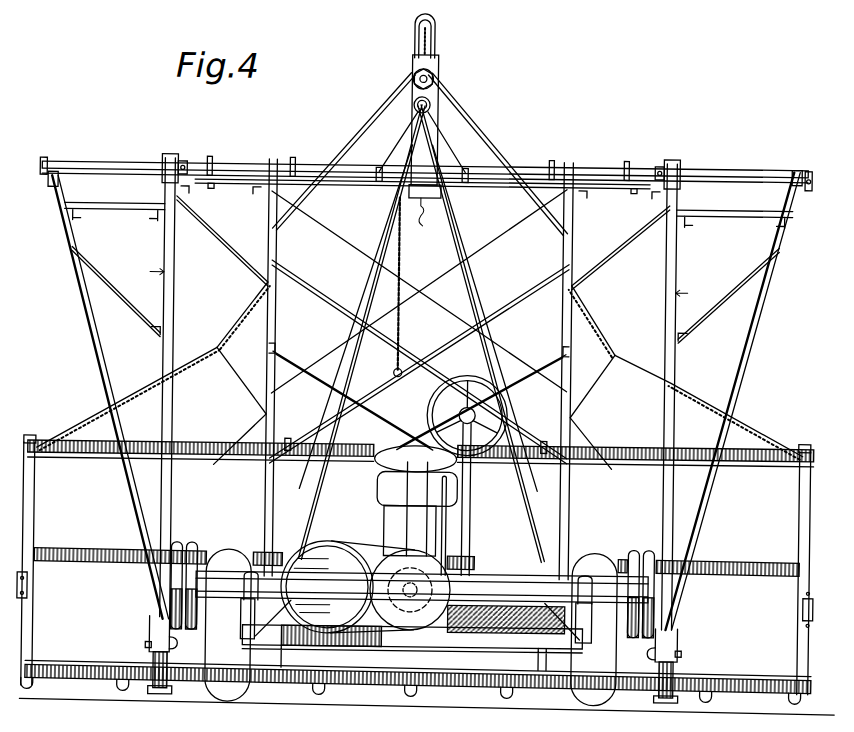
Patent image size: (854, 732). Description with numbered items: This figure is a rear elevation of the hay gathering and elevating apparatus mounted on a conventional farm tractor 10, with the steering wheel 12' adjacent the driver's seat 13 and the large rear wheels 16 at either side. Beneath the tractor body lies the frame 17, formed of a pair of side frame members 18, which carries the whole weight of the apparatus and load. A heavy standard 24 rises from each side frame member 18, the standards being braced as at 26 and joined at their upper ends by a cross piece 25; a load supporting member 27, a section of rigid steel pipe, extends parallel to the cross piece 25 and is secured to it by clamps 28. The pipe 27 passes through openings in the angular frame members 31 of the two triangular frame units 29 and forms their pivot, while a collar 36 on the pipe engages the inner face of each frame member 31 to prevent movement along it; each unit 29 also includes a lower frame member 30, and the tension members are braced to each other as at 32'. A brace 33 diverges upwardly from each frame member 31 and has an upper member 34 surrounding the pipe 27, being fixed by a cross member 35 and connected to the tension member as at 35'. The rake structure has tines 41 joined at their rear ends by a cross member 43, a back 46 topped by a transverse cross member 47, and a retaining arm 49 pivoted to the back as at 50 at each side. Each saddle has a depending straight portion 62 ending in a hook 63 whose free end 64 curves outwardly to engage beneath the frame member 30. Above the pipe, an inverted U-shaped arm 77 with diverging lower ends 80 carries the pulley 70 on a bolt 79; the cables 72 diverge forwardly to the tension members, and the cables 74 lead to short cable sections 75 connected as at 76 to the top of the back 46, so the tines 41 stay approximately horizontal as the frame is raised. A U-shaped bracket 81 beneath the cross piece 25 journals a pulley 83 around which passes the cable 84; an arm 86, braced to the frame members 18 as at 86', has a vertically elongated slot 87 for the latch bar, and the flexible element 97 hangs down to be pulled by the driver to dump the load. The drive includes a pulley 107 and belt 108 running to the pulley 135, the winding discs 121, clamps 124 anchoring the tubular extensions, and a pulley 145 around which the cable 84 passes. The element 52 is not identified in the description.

The farm tractor 10 is at (370, 494).
The steering wheel 12' is at (466, 458).
The driver's seat 13 is at (415, 458).
The rear wheels 16 is at (240, 696).
The frame 17 is at (480, 648).
The side frame members 18 is at (243, 628).
The standard 24 is at (252, 318).
The cross piece 25 is at (226, 188).
The brace 26 is at (487, 242).
The load supporting member 27 is at (518, 171).
The clamps 28 is at (210, 161).
The triangular frame unit 29 is at (417, 279).
The lower frame member 30 is at (152, 636).
The angular frame member 31 is at (175, 355).
The brace 32' is at (423, 238).
The brace 33 is at (84, 322).
The upper member 34 is at (803, 169).
The cross member 35 is at (428, 227).
The connection 35' is at (425, 291).
The collar 36 is at (182, 167).
The tines 41 is at (124, 685).
The cross member 43 is at (757, 676).
The back 46 is at (800, 506).
The transverse cross member 47 is at (200, 446).
The retaining arm 49 is at (36, 548).
The pivot connection 50 is at (804, 607).
The flange 52 is at (32, 590).
The depending straight portion 62 is at (181, 652).
The hook 63 is at (154, 660).
The free end 64 is at (147, 648).
The pulley 70 is at (432, 28).
The cables 72 is at (360, 297).
The cables 74 is at (388, 100).
The short cable sections 75 is at (232, 376).
The connection 76 is at (32, 442).
The inverted U-shaped arm 77 is at (434, 56).
The bolt 79 is at (413, 27).
The diverging lower ends 80 is at (462, 140).
The U-shaped bracket 81 is at (424, 210).
The pulley 83 is at (405, 208).
The cable 84 is at (342, 380).
The arm 86 is at (401, 119).
The brace 86' is at (418, 397).
The slot 87 is at (436, 76).
The flexible element 97 is at (400, 336).
The pulley 107 is at (398, 570).
The belt 108 is at (360, 536).
The discs 121 is at (195, 546).
The clamps 124 is at (252, 572).
The pulley 135 is at (330, 554).
The pulley 145 is at (280, 570).